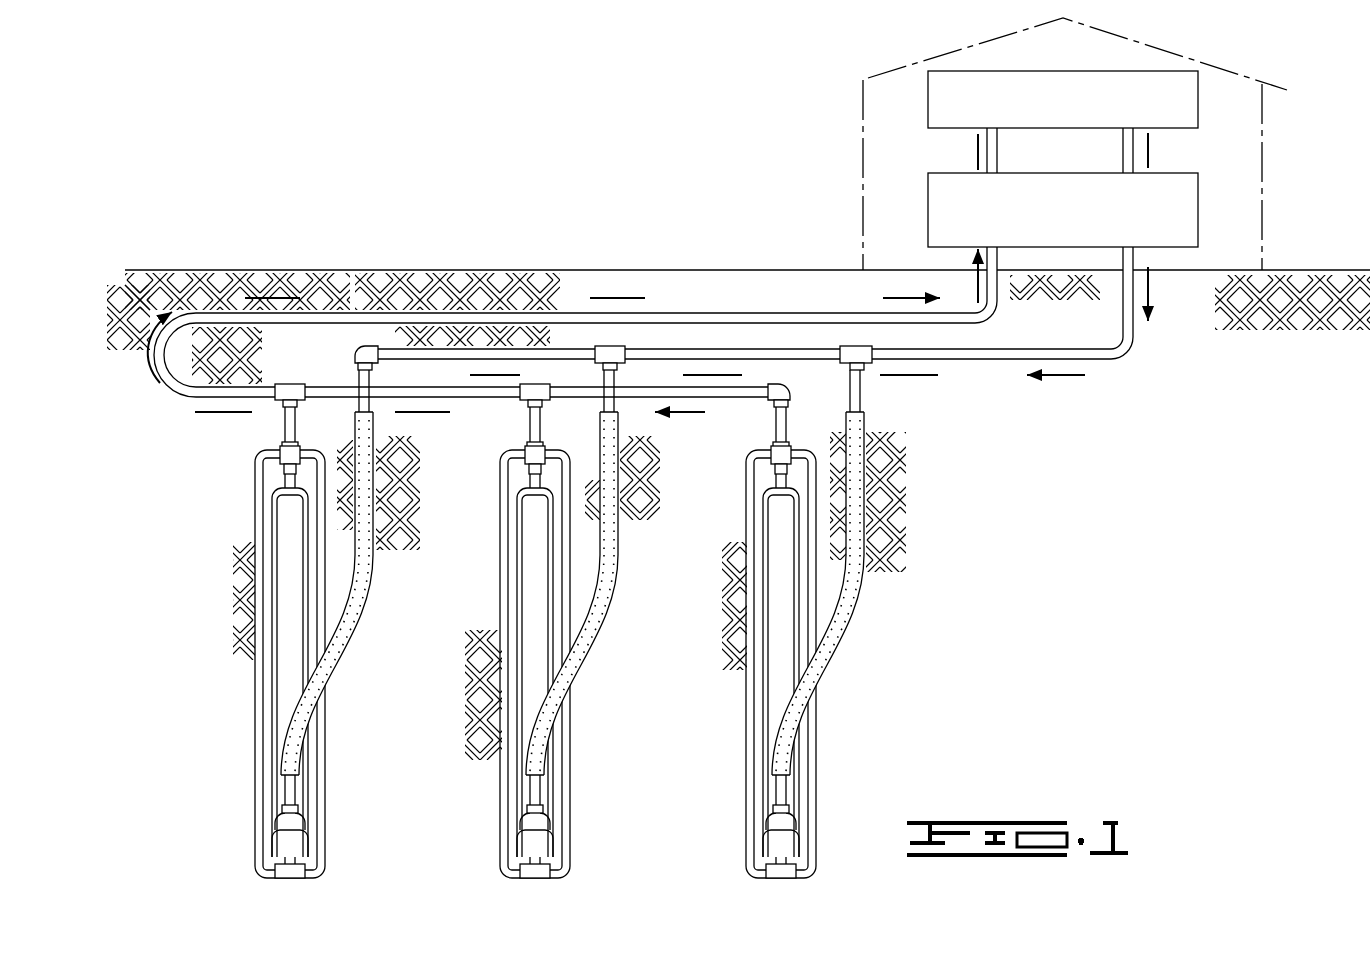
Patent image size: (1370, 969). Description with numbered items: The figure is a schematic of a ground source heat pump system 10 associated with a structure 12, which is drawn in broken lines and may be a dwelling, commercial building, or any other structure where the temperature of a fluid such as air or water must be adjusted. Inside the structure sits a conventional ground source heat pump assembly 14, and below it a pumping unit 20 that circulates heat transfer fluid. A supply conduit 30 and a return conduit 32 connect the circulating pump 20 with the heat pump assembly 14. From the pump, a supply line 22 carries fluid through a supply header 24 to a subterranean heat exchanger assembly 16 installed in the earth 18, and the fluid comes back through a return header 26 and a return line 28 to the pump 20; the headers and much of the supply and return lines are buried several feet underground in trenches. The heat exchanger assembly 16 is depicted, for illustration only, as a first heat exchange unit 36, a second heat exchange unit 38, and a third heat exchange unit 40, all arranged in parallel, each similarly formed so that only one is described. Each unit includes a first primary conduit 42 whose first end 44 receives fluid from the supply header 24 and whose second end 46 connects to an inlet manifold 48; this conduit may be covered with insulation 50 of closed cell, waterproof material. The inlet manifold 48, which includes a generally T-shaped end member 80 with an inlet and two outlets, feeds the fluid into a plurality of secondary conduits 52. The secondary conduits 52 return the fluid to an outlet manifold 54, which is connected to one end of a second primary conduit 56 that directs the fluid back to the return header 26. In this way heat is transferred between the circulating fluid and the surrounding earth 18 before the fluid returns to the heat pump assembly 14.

The ground source heat pump system 10 is at (812, 225).
The structure 12 is at (1266, 122).
The ground source heat pump assembly 14 is at (1200, 92).
The subterranean heat exchanger assembly 16 is at (865, 637).
The earth 18 is at (895, 490).
The pumping unit 20 is at (1198, 205).
The supply line 22 is at (1100, 362).
The supply header 24 is at (735, 350).
The return header 26 is at (468, 398).
The return line 28 is at (720, 313).
The supply conduit 30 is at (996, 146).
The return conduit 32 is at (1124, 146).
The first heat exchange unit 36 is at (883, 600).
The second heat exchange unit 38 is at (597, 655).
The third heat exchange unit 40 is at (360, 657).
The first primary conduit 42 is at (830, 667).
The first end 44 is at (862, 389).
The second end 46 is at (780, 797).
The inlet manifold 48 is at (808, 880).
The insulation 50 is at (858, 542).
The secondary conduits 52 is at (745, 510).
The outlet manifold 54 is at (750, 452).
The second primary conduit 56 is at (777, 419).
The end member 80 is at (775, 880).